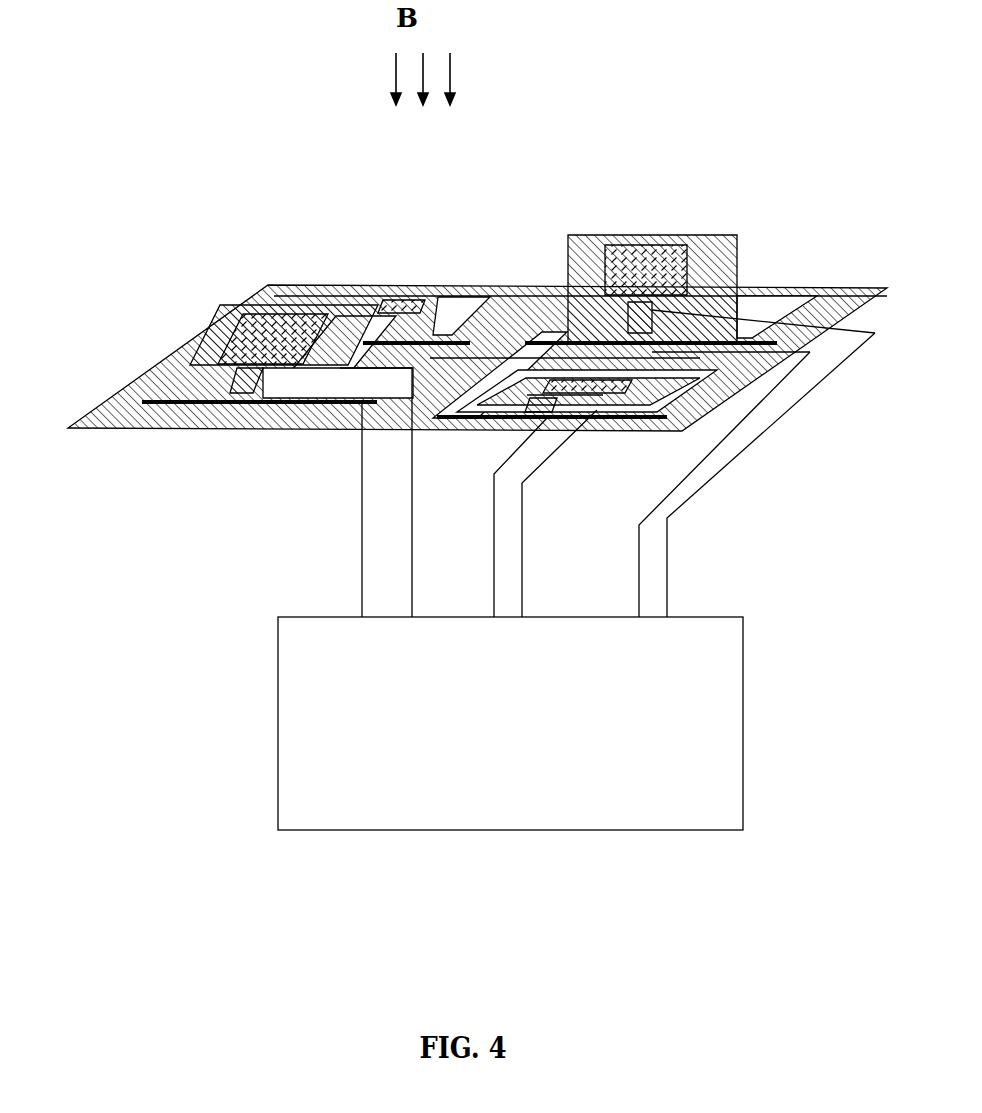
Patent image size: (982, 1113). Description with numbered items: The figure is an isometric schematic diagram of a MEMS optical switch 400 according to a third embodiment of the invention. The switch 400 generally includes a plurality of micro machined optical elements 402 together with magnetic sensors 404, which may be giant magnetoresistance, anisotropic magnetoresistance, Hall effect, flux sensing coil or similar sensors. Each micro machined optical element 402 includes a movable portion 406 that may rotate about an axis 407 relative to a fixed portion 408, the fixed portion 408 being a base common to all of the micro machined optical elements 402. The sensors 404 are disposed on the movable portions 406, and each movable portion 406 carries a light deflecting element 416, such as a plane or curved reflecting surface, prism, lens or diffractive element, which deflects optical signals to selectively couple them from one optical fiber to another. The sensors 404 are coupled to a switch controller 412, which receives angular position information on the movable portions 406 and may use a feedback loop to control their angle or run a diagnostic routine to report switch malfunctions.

The MEMS optical switch 400 is at (164, 104).
The micro machined optical element 402 is at (148, 453).
The magnetic sensor 404 is at (243, 431).
The movable portion 406 is at (238, 304).
The axis 407 is at (137, 410).
The fixed portion 408 is at (176, 356).
The switch controller 412 is at (274, 615).
The light deflecting element 416 is at (262, 292).